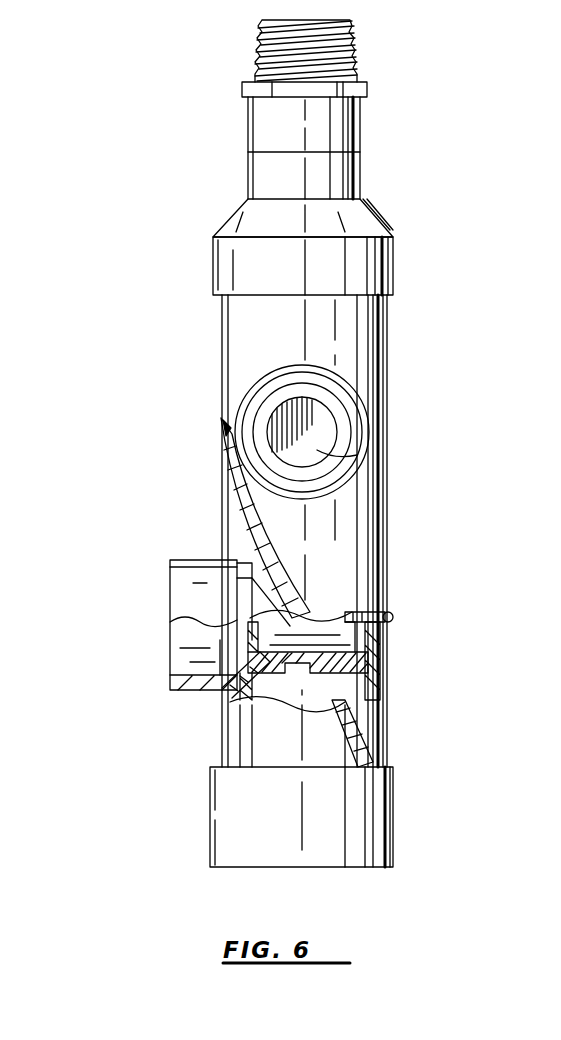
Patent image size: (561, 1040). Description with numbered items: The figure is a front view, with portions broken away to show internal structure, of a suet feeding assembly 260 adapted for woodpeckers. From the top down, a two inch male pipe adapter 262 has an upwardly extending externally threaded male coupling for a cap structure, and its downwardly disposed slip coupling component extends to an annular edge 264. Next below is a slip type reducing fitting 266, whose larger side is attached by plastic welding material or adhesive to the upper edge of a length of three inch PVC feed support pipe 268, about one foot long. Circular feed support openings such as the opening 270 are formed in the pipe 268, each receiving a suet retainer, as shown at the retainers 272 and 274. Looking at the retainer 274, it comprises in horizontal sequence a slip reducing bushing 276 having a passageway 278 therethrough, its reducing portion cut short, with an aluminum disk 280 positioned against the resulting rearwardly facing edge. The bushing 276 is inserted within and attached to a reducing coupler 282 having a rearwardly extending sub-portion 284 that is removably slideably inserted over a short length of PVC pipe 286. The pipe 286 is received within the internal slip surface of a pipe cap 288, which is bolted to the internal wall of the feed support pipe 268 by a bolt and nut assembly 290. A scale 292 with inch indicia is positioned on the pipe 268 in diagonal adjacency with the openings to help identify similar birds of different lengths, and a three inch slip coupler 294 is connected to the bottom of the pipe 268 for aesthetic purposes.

The feeding assembly 260 is at (480, 93).
The male pipe adapter 262 is at (242, 90).
The annular edge 264 is at (248, 152).
The reducing fitting 266 is at (382, 222).
The feed support pipe 268 is at (350, 346).
The feed support opening 270 is at (250, 394).
The suet retainer 272 is at (378, 428).
The suet retainer 274 is at (168, 562).
The slip reducing bushing 276 is at (365, 392).
The passageway 278 is at (178, 660).
The aluminum disk 280 is at (322, 450).
The reducing coupler 282 is at (212, 690).
The sub-portion 284 is at (290, 700).
The PVC pipe 286 is at (372, 640).
The pipe cap 288 is at (375, 680).
The bolt and nut assembly 290 is at (392, 616).
The scale 292 is at (226, 462).
The slip coupler 294 is at (393, 810).